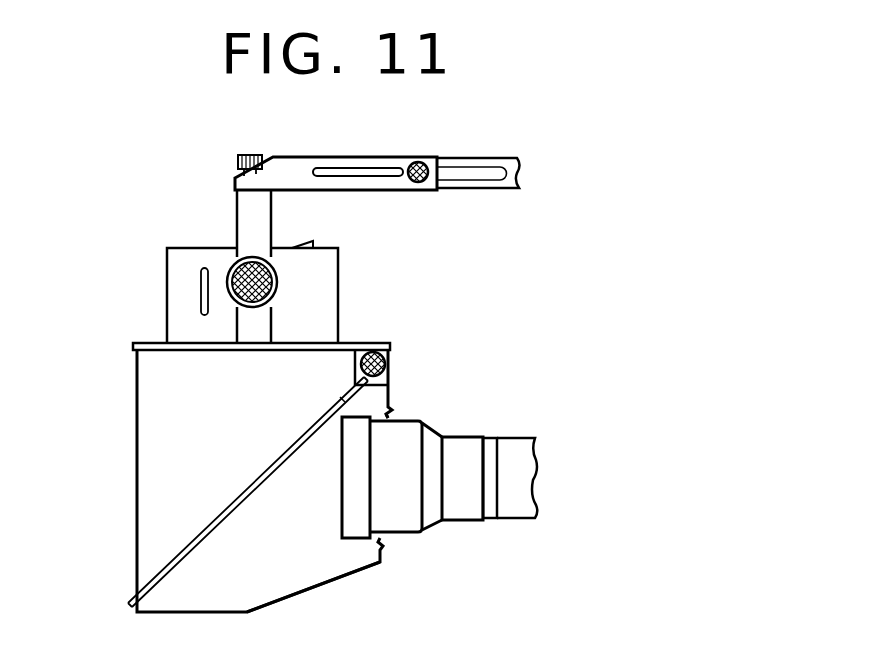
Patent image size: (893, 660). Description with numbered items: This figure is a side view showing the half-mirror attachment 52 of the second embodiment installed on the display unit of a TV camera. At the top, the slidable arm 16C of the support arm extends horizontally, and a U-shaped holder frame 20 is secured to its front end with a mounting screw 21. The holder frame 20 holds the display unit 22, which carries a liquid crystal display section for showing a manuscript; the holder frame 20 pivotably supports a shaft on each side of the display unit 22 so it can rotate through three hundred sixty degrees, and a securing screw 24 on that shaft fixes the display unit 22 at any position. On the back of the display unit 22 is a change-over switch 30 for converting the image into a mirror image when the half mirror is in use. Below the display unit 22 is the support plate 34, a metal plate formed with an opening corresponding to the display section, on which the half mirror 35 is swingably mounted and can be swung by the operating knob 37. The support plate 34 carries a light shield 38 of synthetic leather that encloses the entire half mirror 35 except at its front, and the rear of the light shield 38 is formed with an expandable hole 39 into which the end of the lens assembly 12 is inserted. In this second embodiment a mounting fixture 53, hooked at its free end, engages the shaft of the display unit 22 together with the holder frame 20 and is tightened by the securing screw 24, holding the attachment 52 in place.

The lens assembly 12 is at (460, 440).
The slidable arm 16C is at (334, 157).
The holder frame 20 is at (237, 212).
The mounting screw 21 is at (250, 155).
The display unit 22 is at (338, 279).
The securing screw 24 is at (232, 268).
The change-over switch 30 is at (303, 240).
The support plate 34 is at (137, 367).
The half mirror 35 is at (229, 503).
The operating knob 37 is at (386, 364).
The light shield 38 is at (330, 580).
The hole 39 is at (390, 412).
The half-mirror attachment 52 is at (118, 468).
The mounting fixture 53 is at (260, 323).